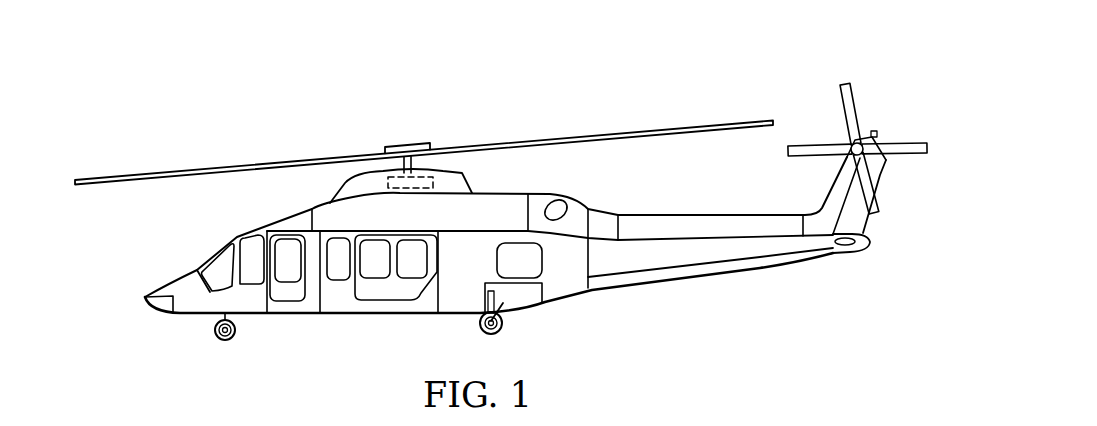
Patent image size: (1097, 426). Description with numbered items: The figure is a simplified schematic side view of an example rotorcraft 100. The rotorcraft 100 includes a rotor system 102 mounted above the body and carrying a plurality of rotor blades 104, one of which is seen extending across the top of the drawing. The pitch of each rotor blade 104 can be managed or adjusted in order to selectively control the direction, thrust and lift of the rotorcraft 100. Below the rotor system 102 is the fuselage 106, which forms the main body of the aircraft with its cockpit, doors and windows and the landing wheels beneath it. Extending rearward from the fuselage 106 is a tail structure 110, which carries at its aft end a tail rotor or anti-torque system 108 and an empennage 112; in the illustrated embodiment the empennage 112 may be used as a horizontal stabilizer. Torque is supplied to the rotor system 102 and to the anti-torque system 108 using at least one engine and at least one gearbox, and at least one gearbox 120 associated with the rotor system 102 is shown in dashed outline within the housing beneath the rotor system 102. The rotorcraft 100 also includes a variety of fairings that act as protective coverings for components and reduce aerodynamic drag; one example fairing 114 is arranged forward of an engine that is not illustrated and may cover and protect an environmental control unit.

The rotorcraft 100 is at (283, 68).
The rotor system 102 is at (420, 126).
The rotor blade 104 is at (242, 165).
The fuselage 106 is at (340, 315).
The tail rotor or anti-torque system 108 is at (882, 114).
The tail structure 110 is at (786, 278).
The empennage 112 is at (847, 252).
The fairing 114 is at (288, 218).
The gearbox 120 is at (433, 183).